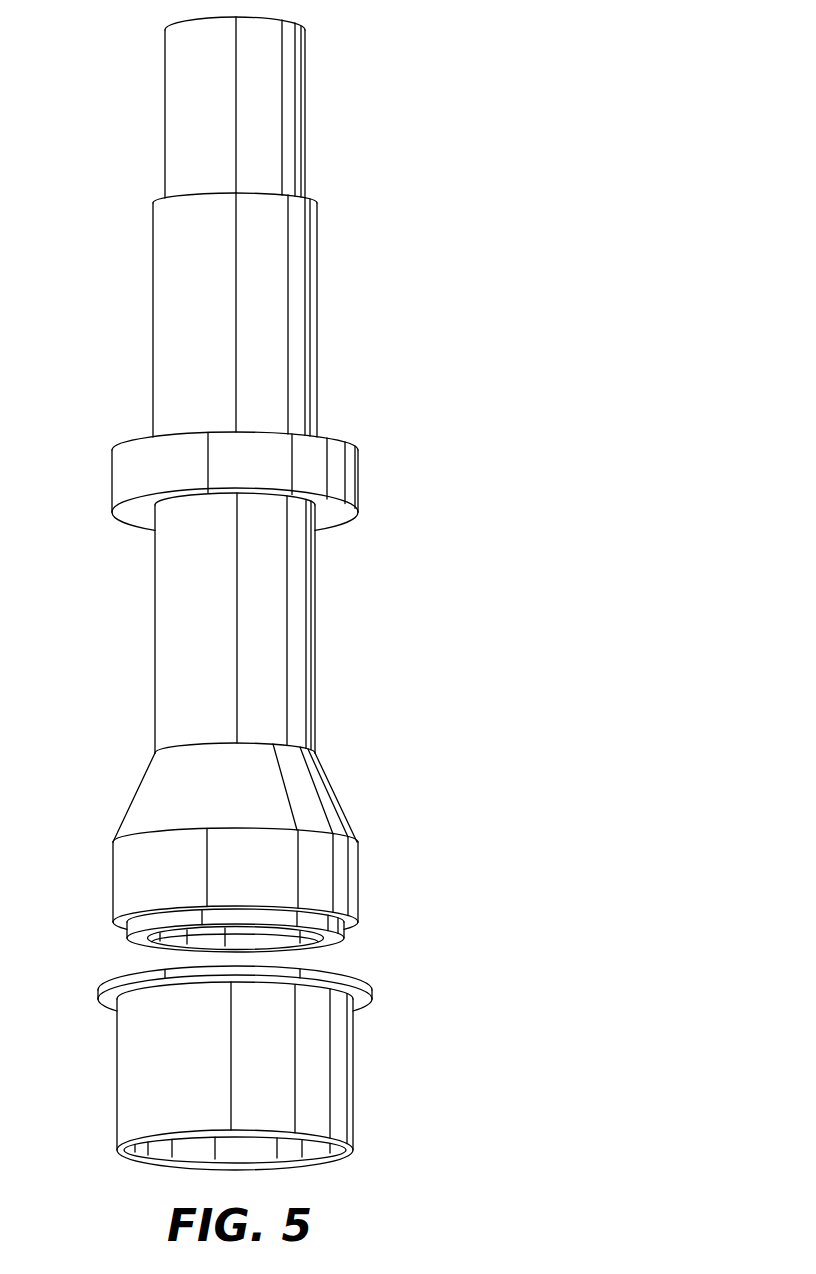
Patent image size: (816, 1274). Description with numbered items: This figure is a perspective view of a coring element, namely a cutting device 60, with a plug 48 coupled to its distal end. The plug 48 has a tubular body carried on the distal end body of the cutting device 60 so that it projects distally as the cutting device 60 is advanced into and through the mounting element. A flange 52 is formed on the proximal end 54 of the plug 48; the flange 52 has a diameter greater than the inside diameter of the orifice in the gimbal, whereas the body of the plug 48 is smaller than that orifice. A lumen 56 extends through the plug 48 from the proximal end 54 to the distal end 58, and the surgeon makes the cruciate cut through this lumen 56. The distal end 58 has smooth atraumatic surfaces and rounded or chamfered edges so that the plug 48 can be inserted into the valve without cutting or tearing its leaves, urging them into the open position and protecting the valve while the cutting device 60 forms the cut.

The cutting device 60 is at (297, 613).
The flange 52 is at (255, 967).
The proximal end 54 is at (112, 982).
The plug 48 is at (250, 1094).
The lumen 56 is at (303, 1147).
The distal end 58 is at (133, 1158).